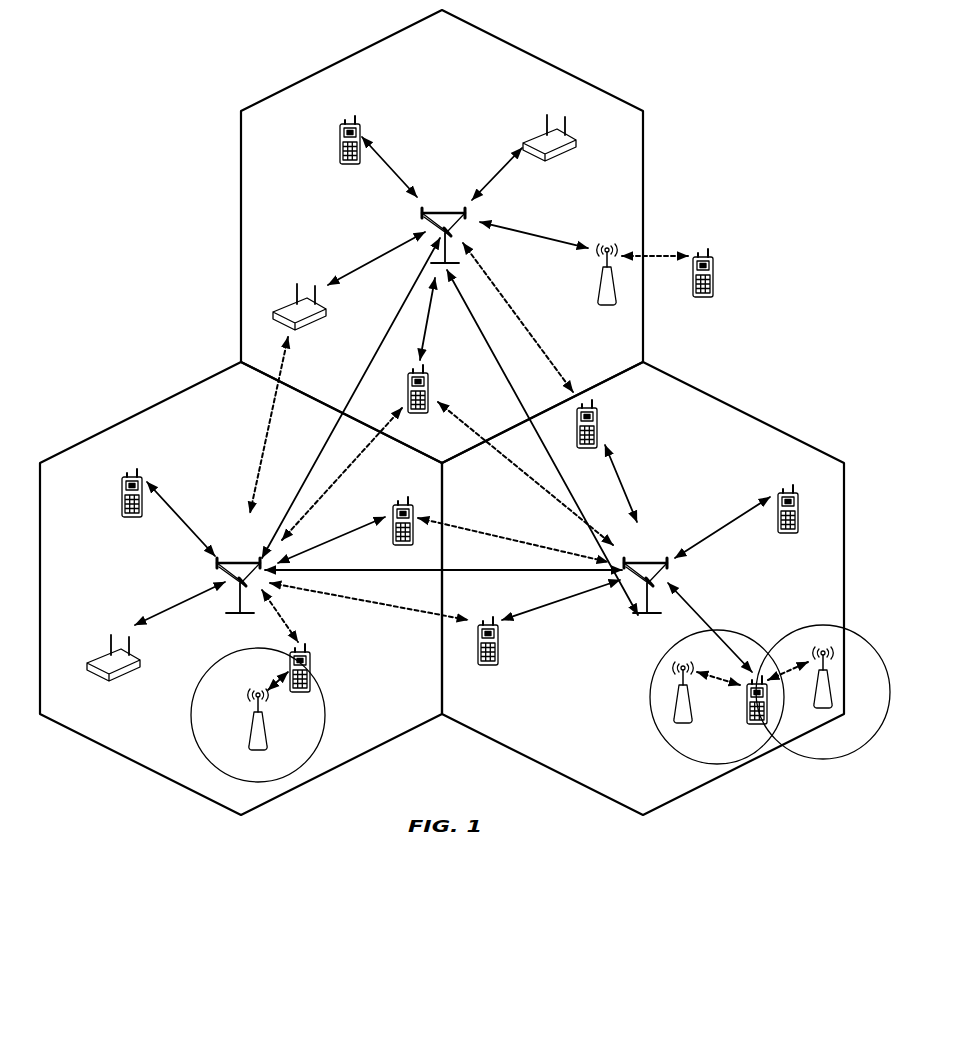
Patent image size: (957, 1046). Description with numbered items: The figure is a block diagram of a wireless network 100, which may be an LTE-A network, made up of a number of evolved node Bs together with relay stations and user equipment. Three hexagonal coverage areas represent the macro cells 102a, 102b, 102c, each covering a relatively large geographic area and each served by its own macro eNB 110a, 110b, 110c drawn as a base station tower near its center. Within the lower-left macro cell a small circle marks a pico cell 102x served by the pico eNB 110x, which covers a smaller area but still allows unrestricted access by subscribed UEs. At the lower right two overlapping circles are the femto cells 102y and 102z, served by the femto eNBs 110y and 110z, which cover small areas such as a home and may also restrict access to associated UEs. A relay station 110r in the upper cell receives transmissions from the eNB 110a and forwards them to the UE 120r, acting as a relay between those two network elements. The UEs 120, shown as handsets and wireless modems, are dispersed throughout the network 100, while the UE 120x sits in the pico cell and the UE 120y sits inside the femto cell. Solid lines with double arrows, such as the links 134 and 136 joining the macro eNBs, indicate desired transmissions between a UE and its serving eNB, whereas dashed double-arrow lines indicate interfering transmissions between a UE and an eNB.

The wireless network 100 is at (782, 72).
The macro cell 102a is at (556, 47).
The macro cell 102b is at (140, 412).
The macro cell 102c is at (747, 411).
The pico cell 102x is at (213, 664).
The femto cell 102y is at (654, 670).
The femto cell 102z is at (818, 623).
The macro eNB 110a is at (446, 207).
The macro eNB 110b is at (238, 558).
The macro eNB 110c is at (653, 558).
The relay station 110r is at (593, 292).
The pico eNB 110x is at (266, 752).
The femto eNB 110y is at (690, 716).
The femto eNB 110z is at (830, 702).
The UE 120 is at (339, 137).
The UE 120r is at (712, 290).
The UE 120x is at (312, 663).
The UE 120y is at (771, 722).
The backhaul link between base stations 134 is at (346, 394).
The backhaul link between base stations 136 is at (502, 394).